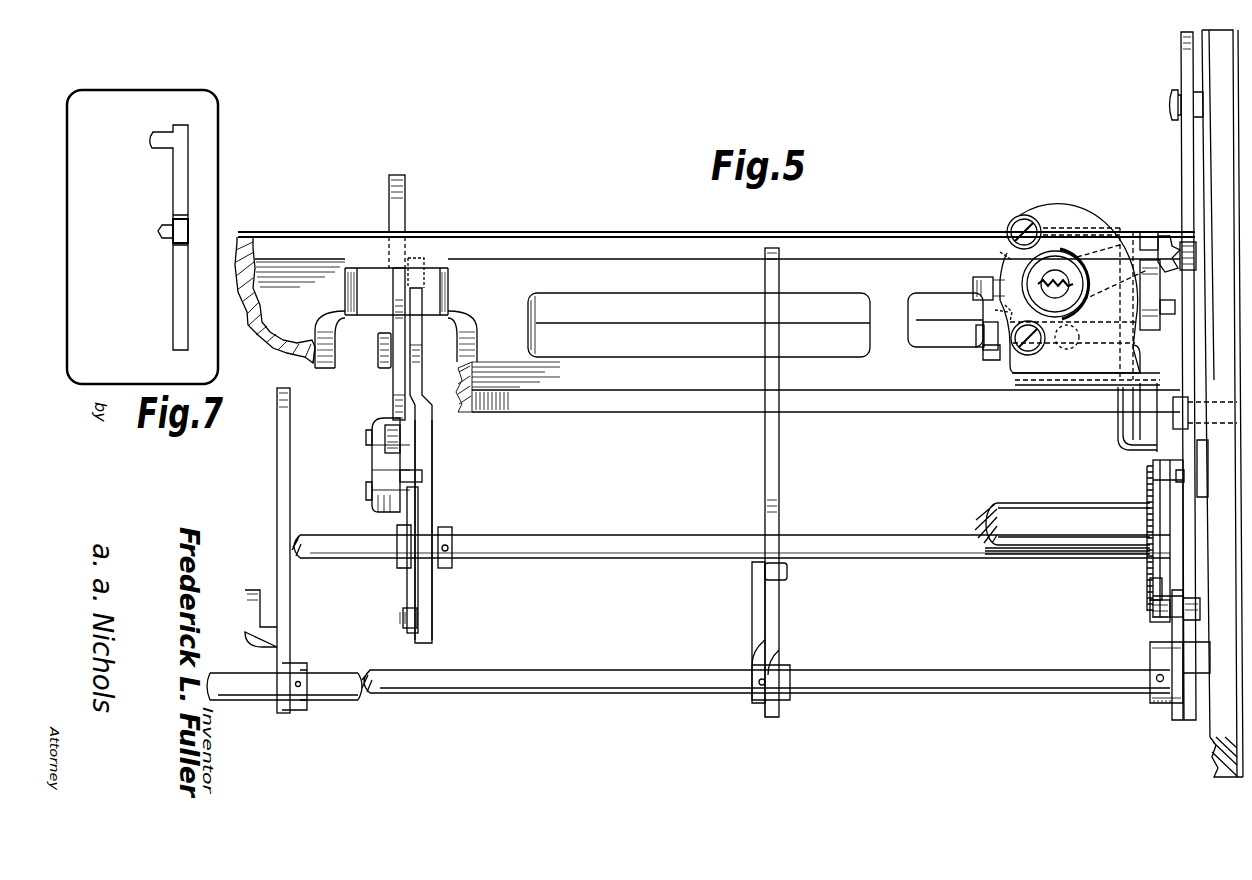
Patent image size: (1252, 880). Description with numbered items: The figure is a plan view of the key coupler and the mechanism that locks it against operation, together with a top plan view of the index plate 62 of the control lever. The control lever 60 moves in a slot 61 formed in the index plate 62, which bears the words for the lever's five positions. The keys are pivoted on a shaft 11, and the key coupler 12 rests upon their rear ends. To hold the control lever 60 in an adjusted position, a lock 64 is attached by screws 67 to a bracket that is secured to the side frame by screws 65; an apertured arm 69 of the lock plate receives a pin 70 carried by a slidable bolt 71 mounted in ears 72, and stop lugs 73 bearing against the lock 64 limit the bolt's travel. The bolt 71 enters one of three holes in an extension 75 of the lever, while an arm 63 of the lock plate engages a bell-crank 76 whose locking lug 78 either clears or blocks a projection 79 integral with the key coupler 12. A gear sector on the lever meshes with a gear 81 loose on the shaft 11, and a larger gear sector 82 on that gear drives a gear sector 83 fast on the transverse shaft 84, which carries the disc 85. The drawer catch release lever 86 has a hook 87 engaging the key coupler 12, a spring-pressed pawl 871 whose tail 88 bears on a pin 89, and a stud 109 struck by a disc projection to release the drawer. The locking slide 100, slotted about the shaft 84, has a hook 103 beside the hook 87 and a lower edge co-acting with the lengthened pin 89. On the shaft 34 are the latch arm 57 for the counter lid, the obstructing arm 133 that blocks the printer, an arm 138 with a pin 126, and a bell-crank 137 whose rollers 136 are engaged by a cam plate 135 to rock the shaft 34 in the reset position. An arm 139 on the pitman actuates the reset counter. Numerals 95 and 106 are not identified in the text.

In FIG. 7, the index plate 62 is at (143, 90).
In FIG. 7, the slot 61 is at (180, 143).
In FIG. 7, the control lever 60 is at (178, 232).
In FIG. 5, the control lever 60 is at (1198, 257).
In FIG. 5, the key coupler 12 is at (715, 322).
In FIG. 5, the vertical bar 95 is at (407, 180).
In FIG. 5, the hook 87 is at (399, 273).
In FIG. 5, the drawer catch release lever 86 is at (392, 384).
In FIG. 5, the hook 103 is at (425, 297).
In FIG. 5, the locking slide 100 is at (434, 458).
In FIG. 5, the tail 88 is at (381, 490).
In FIG. 5, the spring-pressed pawl 871 is at (400, 440).
In FIG. 5, the pin 89 is at (424, 476).
In FIG. 5, the stud 109 is at (436, 508).
In FIG. 5, the disc 85 is at (410, 587).
In FIG. 5, the pin 106 is at (404, 626).
In FIG. 5, the transverse shaft 84 is at (580, 535).
In FIG. 5, the shaft 11 is at (1018, 510).
In FIG. 5, the shaft 34 is at (480, 672).
In FIG. 5, the arm 139 is at (285, 480).
In FIG. 5, the latch arm 57 is at (246, 642).
In FIG. 5, the obstructing arm 133 is at (780, 466).
In FIG. 5, the pin 126 is at (788, 577).
In FIG. 5, the arm 138 is at (757, 605).
In FIG. 5, the extension 75 is at (1184, 178).
In FIG. 5, the bell-crank 76 is at (1148, 232).
In FIG. 5, the arm 63 is at (1163, 240).
In FIG. 5, the ears 72 is at (1178, 303).
In FIG. 5, the screws 65 is at (1185, 406).
In FIG. 5, the locking lug 78 is at (1135, 450).
In FIG. 5, the projection 79 is at (1116, 452).
In FIG. 5, the gear 81 is at (1184, 470).
In FIG. 5, the gear sector 82 is at (1150, 490).
In FIG. 5, the cam plate 135 is at (1150, 586).
In FIG. 5, the gear sector 83 is at (1158, 606).
In FIG. 5, the bell-crank 137 is at (1172, 630).
In FIG. 5, the rollers 136 is at (1192, 655).
In FIG. 5, the screws 67 is at (1018, 216).
In FIG. 5, the pin 70 is at (1055, 309).
In FIG. 5, the arm 69 is at (1075, 332).
In FIG. 5, the lock 64 is at (980, 290).
In FIG. 5, the stop lugs 73 is at (1000, 258).
In FIG. 5, the slidable bolt 71 is at (975, 333).